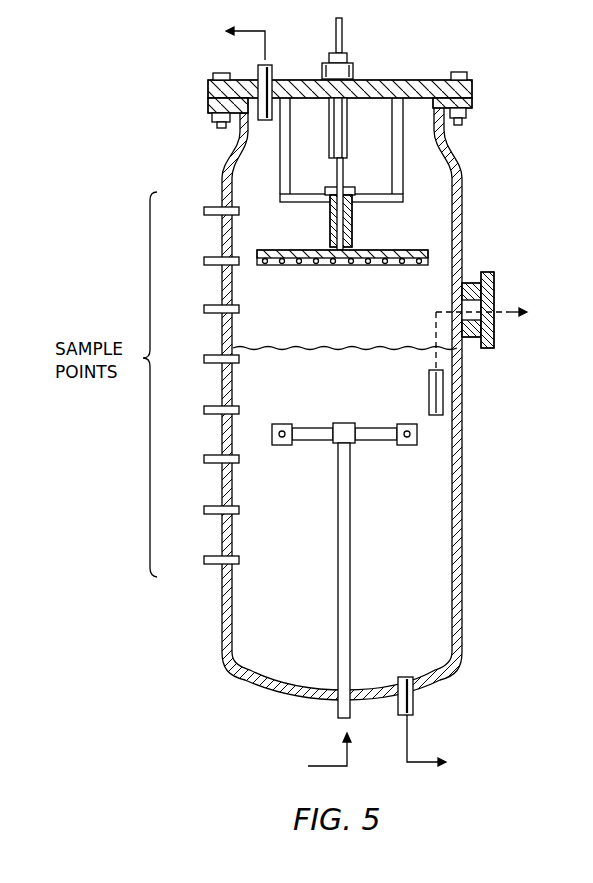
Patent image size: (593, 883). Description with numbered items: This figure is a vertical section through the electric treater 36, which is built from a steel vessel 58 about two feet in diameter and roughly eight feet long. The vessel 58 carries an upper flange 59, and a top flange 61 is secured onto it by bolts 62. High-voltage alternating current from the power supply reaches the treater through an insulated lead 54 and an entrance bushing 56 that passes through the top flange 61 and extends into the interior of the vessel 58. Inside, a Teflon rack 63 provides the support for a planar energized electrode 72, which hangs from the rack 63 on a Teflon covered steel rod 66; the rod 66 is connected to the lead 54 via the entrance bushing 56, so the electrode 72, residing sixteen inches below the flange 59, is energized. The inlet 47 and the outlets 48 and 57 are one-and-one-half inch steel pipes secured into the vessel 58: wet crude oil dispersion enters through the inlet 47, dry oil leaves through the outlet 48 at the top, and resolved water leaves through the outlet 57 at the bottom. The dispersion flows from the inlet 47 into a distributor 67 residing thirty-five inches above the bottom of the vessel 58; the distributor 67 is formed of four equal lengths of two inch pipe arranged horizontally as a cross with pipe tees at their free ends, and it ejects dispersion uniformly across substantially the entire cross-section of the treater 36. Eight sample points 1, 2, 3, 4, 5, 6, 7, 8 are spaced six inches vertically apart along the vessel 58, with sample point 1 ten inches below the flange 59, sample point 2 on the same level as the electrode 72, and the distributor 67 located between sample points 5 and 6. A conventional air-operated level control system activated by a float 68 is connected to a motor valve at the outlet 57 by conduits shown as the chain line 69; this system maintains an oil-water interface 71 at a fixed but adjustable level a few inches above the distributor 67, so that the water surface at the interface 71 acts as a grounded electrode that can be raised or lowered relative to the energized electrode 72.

The treater 36 is at (465, 190).
The inlet 47 is at (338, 712).
The outlet 48 is at (275, 66).
The insulated lead 54 is at (342, 30).
The entrance bushing 56 is at (354, 66).
The outlet 57 is at (414, 695).
The vessel 58 is at (464, 228).
The upper flange 59 is at (472, 102).
The top flange 61 is at (472, 80).
The bolts 62 is at (213, 77).
The Teflon rack 63 is at (401, 110).
The Teflon covered steel rod 66 is at (343, 182).
The distributor 67 is at (383, 441).
The float 68 is at (444, 383).
The chain line 69 is at (505, 312).
The oil-water interface 71 is at (357, 346).
The planar energized electrode 72 is at (370, 250).
The sample point No. 1 is at (197, 211).
The sample point No. 2 is at (197, 261).
The sample point No. 3 is at (197, 309).
The sample point No. 4 is at (197, 359).
The sample point No. 5 is at (197, 410).
The sample point No. 6 is at (197, 459).
The sample point No. 7 is at (197, 510).
The sample point No. 8 is at (197, 560).